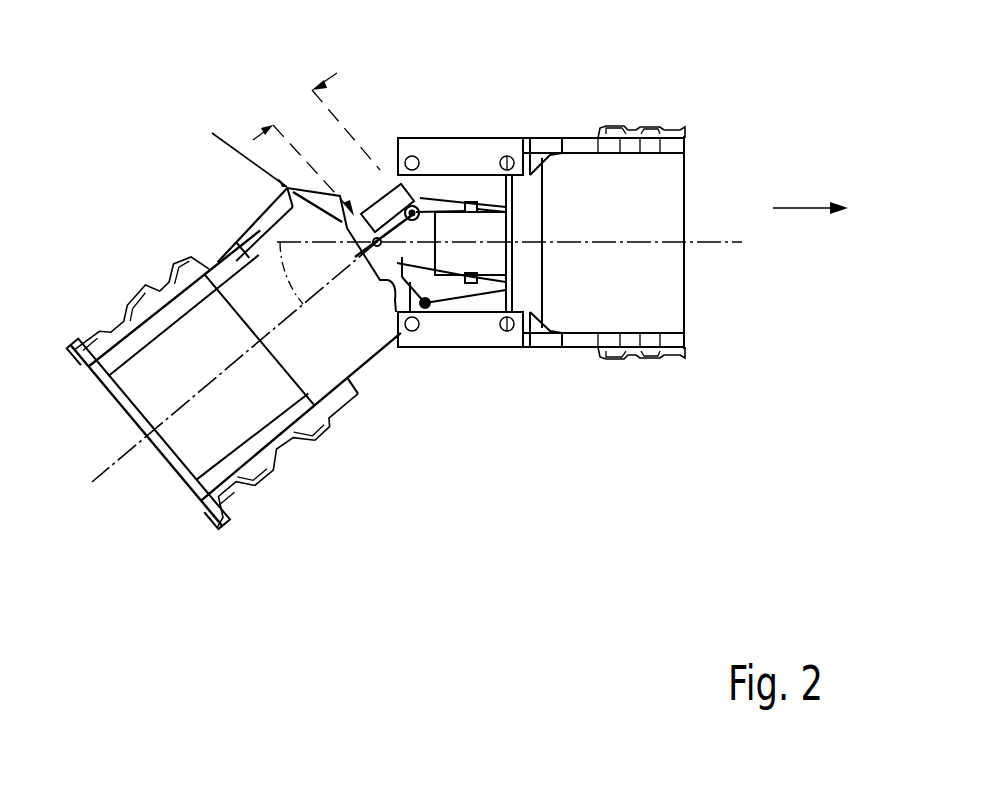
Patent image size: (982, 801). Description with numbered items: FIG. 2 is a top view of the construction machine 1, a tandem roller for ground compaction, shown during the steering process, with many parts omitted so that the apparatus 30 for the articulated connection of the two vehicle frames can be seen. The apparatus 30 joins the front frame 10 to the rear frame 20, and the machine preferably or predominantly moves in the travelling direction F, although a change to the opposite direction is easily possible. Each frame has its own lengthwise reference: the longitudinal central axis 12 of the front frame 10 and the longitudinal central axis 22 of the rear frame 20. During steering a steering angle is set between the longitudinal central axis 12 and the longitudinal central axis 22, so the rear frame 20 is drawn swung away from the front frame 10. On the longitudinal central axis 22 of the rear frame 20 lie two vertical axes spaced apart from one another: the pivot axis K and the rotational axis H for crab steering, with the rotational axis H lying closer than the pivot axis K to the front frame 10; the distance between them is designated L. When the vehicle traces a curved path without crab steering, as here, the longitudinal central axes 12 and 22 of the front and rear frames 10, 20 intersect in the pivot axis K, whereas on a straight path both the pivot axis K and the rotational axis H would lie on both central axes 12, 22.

The construction machine 1 is at (457, 322).
The front frame 10 is at (546, 336).
The longitudinal central axis of the front frame 12 is at (720, 243).
The rear frame 20 is at (257, 220).
The longitudinal central axis of the rear frame 22 is at (121, 462).
The apparatus for the articulated connection of two vehicle frames 30 is at (383, 168).
The vertical rotational axis for crab steering H is at (415, 208).
The vertical pivot axis K is at (236, 145).
The distance between the pivot axis and the rotational axis L is at (316, 144).
The travelling direction F is at (810, 177).